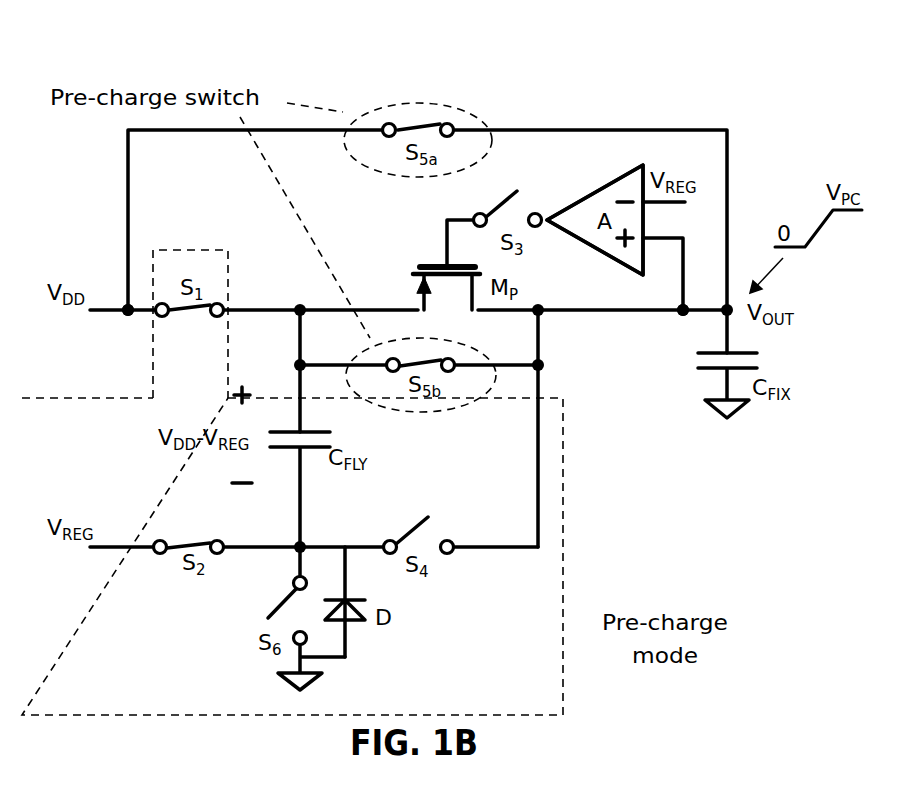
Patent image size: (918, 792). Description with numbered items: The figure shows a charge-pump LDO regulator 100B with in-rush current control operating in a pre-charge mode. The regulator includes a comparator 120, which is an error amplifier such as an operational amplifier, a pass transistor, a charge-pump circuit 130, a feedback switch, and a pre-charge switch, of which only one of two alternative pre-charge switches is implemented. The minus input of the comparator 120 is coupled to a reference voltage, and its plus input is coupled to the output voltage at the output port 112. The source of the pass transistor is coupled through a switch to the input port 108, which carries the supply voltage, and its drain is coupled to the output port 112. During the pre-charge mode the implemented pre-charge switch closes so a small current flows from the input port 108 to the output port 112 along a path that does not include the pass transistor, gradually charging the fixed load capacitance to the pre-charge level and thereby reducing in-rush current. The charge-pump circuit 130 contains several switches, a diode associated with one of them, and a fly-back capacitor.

The charge-pump LDO regulator 100B is at (706, 78).
The input port 108 is at (119, 324).
The output port 112 is at (679, 324).
The comparator 120 is at (600, 190).
The charge-pump circuit 130 is at (292, 556).